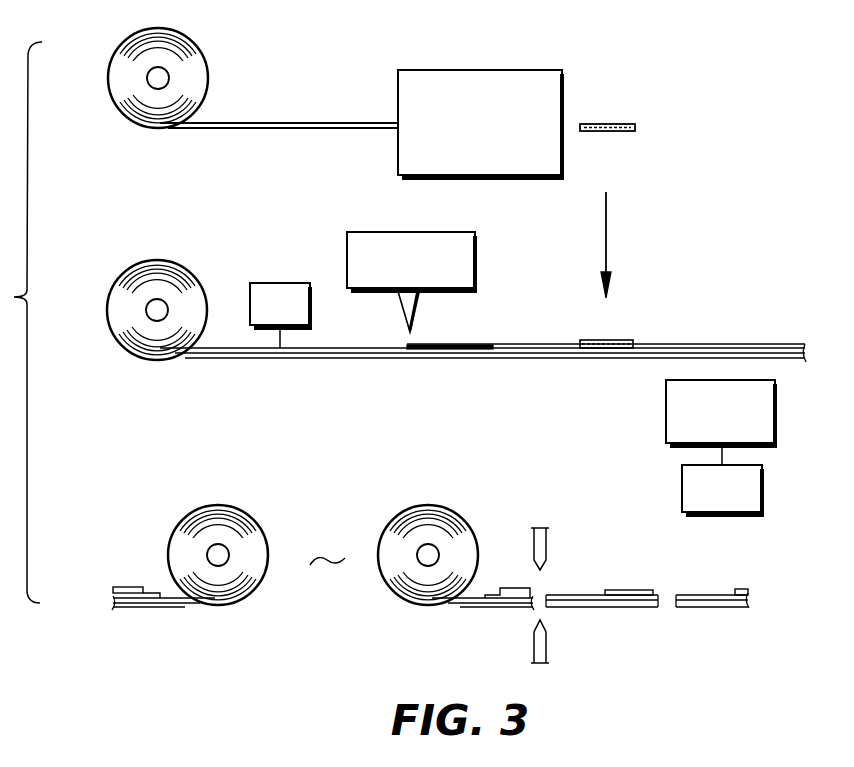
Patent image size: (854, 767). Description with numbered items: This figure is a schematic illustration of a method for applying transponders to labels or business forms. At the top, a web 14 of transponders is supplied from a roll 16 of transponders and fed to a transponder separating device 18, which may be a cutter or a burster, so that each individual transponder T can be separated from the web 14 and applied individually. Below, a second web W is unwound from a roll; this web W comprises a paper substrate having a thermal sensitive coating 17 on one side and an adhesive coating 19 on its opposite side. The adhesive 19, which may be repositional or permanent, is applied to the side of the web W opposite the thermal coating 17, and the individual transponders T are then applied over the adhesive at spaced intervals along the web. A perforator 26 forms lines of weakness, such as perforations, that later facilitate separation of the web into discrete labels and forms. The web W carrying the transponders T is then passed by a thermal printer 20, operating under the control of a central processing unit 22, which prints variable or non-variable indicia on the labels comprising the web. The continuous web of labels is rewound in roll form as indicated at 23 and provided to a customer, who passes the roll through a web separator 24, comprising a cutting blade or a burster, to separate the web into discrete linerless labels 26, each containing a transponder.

The roll of transponders 16 is at (114, 100).
The web of transponders 14 is at (282, 131).
The transponder separating device 18 is at (480, 70).
The transponder T is at (610, 117).
The web W is at (259, 362).
The perforator 26 is at (280, 283).
The adhesive coating 19 is at (476, 263).
The thermal sensitive coating 17 is at (500, 362).
The thermal printer 20 is at (666, 410).
The central processing unit 22 is at (682, 492).
The roll of labels 23 is at (262, 585).
The web separator 24 is at (547, 563).